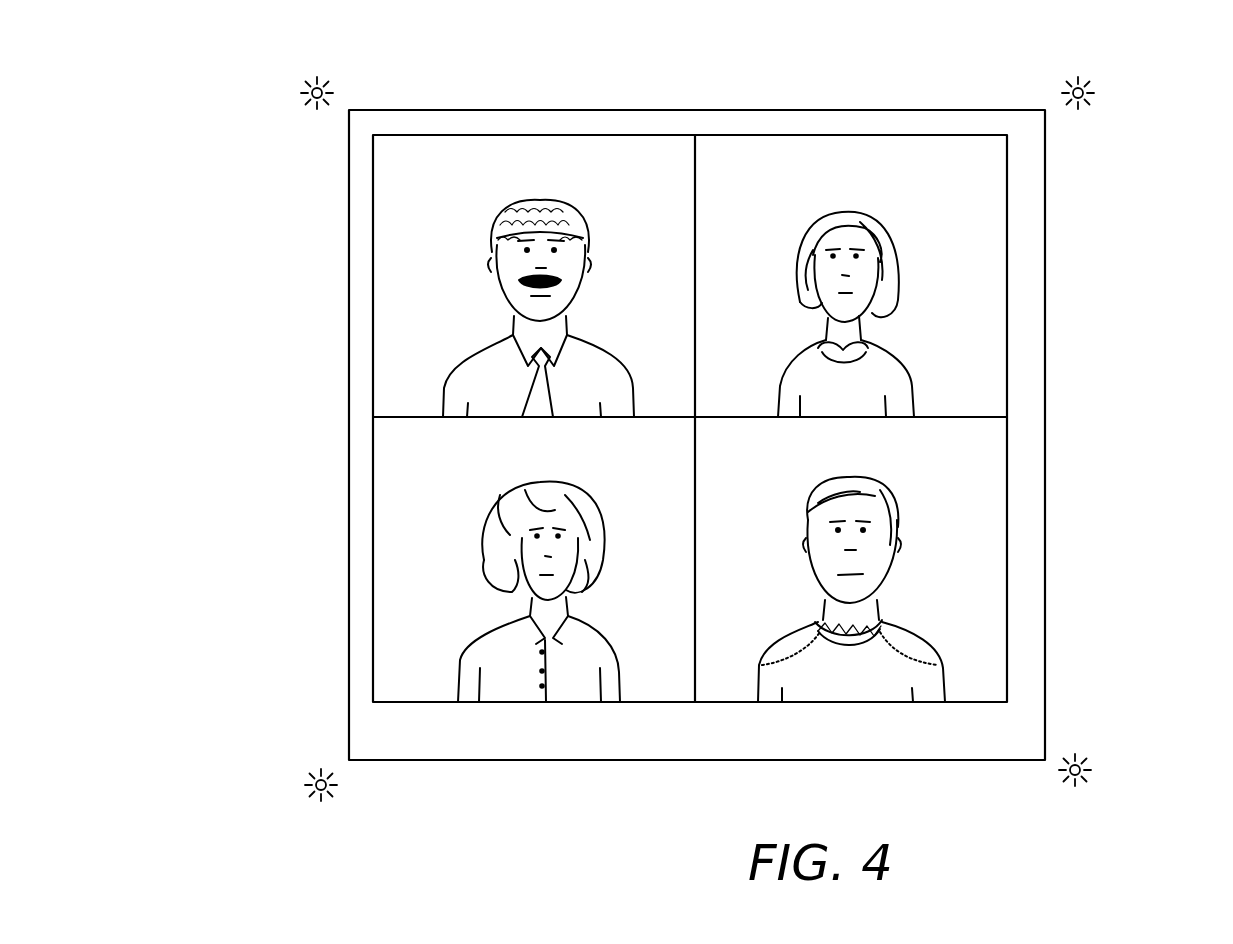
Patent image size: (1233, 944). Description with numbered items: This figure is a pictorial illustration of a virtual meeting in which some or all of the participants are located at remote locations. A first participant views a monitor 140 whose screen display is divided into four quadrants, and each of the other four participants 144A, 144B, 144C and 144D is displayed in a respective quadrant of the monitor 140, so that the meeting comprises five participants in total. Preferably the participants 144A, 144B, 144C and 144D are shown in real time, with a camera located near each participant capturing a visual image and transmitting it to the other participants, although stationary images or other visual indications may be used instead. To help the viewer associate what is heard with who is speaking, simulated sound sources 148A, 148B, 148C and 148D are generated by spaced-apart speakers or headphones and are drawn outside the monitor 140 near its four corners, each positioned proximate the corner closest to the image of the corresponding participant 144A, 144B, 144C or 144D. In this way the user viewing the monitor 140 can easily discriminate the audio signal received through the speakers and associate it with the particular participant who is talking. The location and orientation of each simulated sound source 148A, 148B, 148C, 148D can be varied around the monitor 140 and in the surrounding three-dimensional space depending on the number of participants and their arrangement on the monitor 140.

The monitor 140 is at (712, 110).
The participant 144A is at (458, 365).
The participant 144B is at (465, 640).
The participant 144C is at (893, 357).
The participant 144D is at (925, 637).
The simulated sound source 148A is at (333, 90).
The simulated sound source 148B is at (310, 780).
The simulated sound source 148C is at (1090, 93).
The simulated sound source 148D is at (1080, 760).